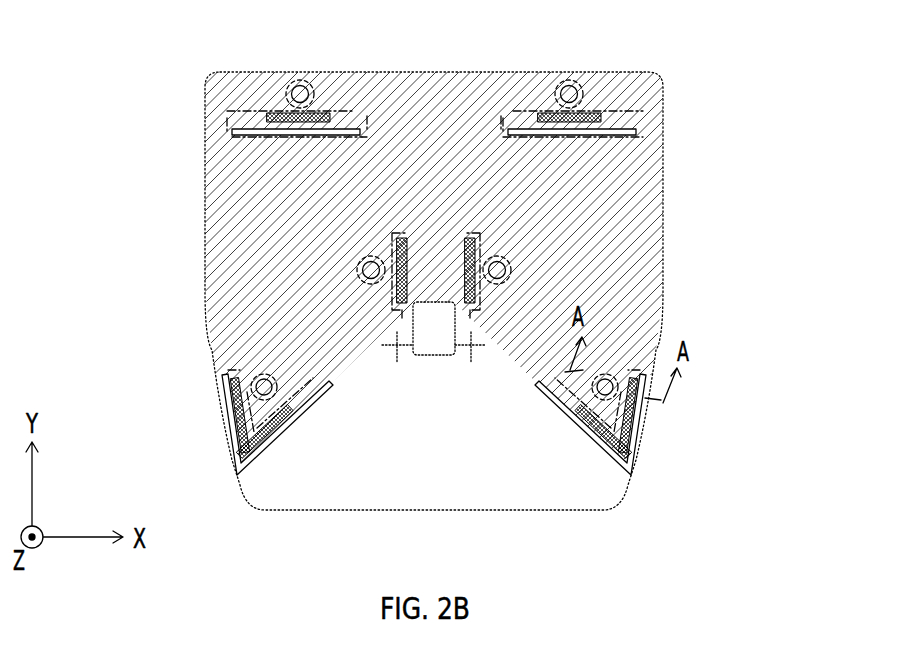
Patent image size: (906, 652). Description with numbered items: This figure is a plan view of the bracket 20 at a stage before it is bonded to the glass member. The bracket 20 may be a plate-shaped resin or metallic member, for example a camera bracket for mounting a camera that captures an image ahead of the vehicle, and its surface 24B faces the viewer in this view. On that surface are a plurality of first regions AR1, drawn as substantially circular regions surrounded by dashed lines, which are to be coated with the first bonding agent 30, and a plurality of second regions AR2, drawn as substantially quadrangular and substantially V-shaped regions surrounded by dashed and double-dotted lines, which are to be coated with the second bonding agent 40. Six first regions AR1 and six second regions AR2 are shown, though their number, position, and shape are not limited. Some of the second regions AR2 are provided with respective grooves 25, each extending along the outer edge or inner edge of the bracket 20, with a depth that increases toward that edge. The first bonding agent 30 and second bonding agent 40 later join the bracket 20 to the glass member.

The bracket 20 is at (700, 87).
The back surface of panel 24B is at (287, 138).
The groove 25 is at (235, 134).
The first bonding agent 30 is at (298, 86).
The second bonding agent 40 is at (271, 112).
The first region AR1 is at (309, 82).
The second region AR2 is at (326, 108).